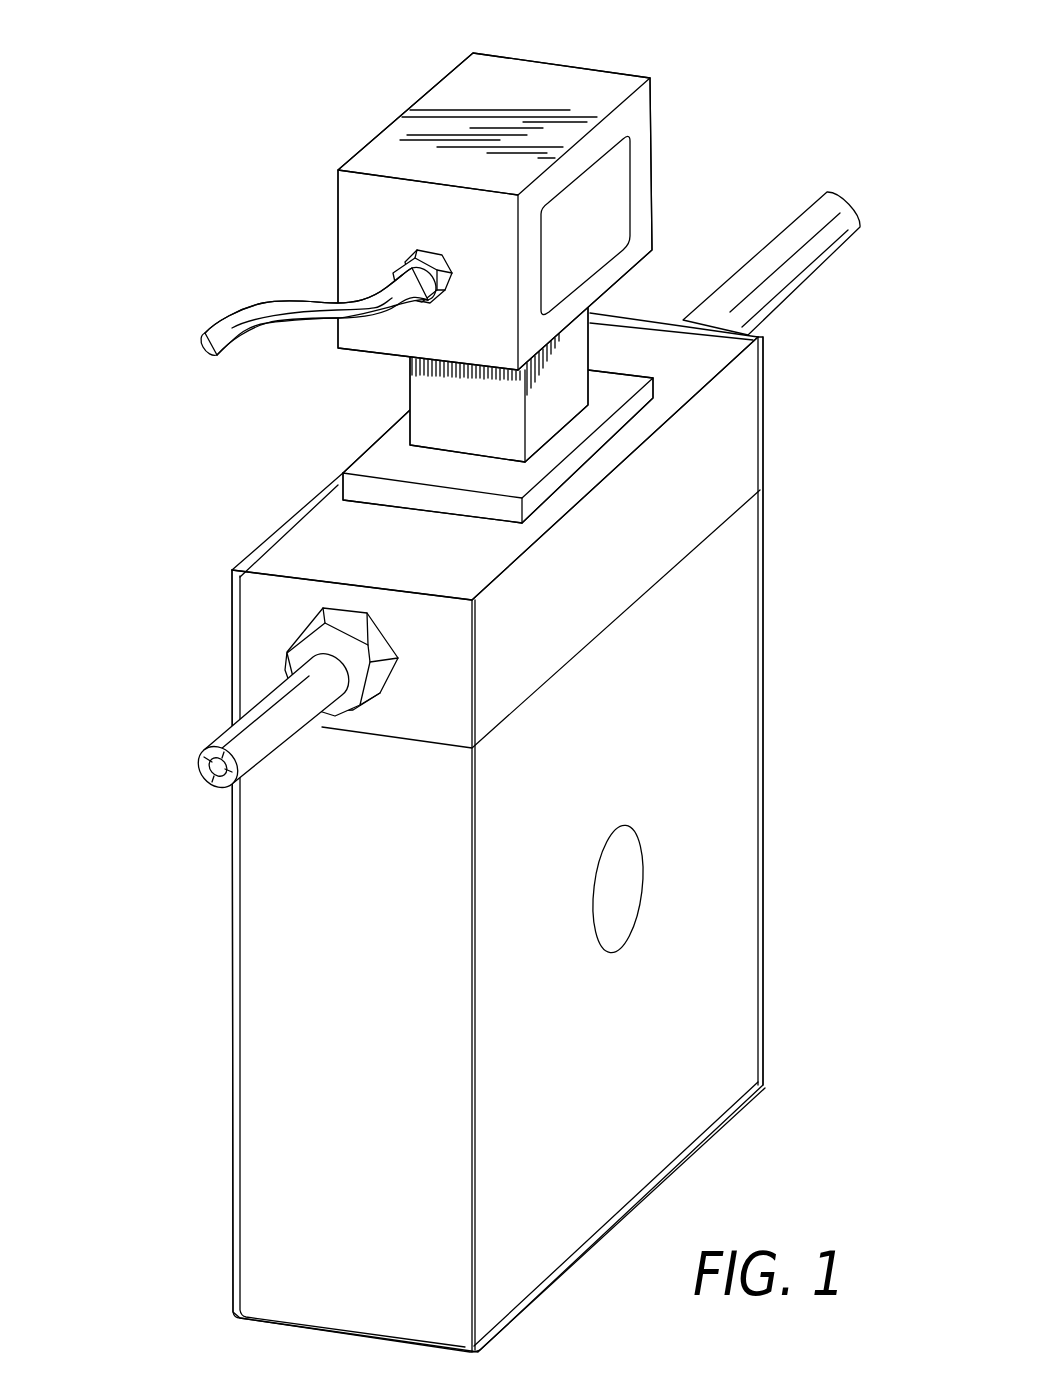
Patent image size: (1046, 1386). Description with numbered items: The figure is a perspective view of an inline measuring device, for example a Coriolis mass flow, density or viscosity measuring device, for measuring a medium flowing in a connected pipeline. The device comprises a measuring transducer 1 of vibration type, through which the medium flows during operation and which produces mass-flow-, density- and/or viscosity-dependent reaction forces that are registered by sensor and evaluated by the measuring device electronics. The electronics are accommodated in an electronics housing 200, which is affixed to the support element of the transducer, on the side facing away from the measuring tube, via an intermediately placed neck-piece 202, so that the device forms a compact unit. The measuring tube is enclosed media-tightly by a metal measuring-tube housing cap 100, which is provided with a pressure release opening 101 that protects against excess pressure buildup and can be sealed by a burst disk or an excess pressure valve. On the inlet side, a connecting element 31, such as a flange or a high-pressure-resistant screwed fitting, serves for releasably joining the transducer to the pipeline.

The measuring transducer 1 is at (467, 676).
The measuring-tube housing cap 100 is at (727, 630).
The pressure release opening 101 is at (608, 912).
The connecting element 31 is at (325, 727).
The electronics housing 200 is at (557, 87).
The neck-piece 202 is at (570, 352).